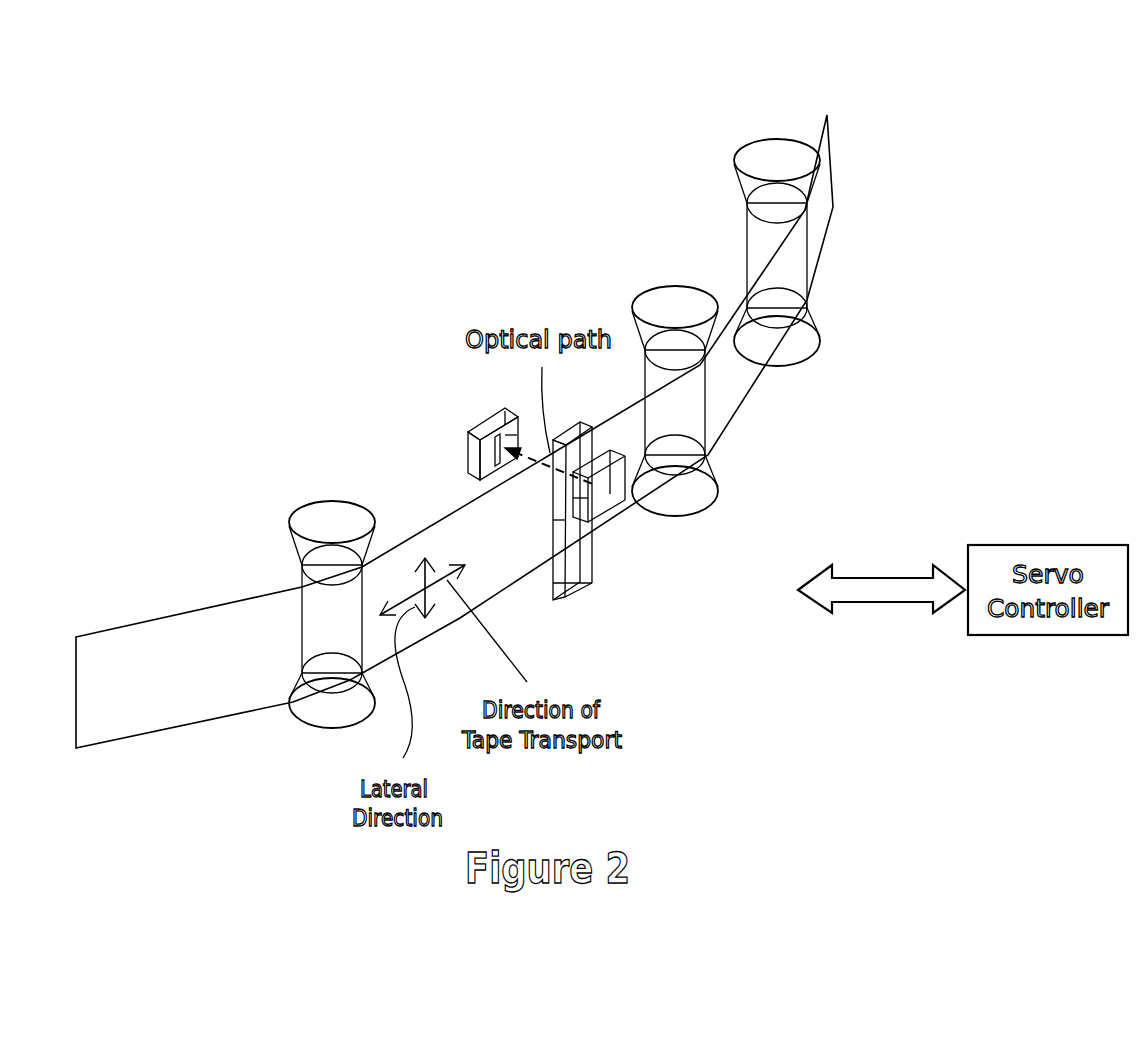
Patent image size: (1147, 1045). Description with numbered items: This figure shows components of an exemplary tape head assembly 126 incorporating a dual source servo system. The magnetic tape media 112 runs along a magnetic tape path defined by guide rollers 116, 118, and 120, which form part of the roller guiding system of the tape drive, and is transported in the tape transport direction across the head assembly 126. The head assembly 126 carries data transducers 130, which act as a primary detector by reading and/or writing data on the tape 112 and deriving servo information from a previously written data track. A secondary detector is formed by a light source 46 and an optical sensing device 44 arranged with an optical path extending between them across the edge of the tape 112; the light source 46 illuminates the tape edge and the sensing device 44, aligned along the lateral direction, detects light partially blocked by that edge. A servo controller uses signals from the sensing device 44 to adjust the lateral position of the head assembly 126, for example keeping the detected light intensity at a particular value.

The magnetic tape media 112 is at (417, 538).
The guide roller 116 is at (307, 503).
The guide roller 118 is at (680, 292).
The guide roller 120 is at (778, 147).
The optical sensing device 44 is at (468, 457).
The light source 46 is at (613, 500).
The tape head assembly 126 is at (630, 634).
The data transducers 130 is at (593, 567).